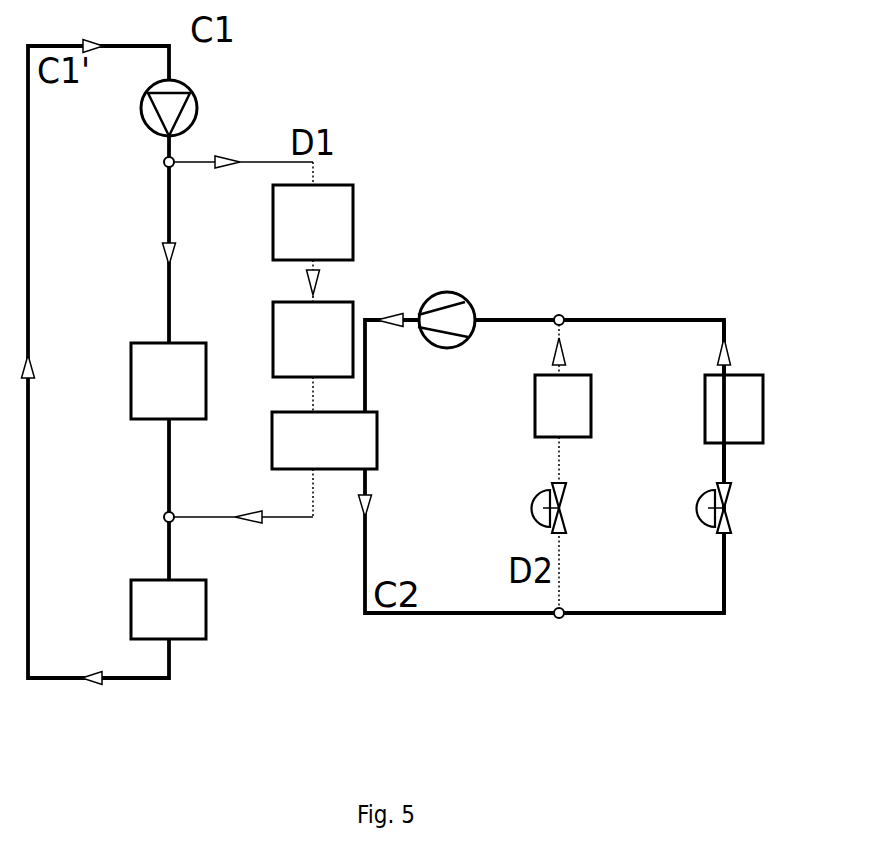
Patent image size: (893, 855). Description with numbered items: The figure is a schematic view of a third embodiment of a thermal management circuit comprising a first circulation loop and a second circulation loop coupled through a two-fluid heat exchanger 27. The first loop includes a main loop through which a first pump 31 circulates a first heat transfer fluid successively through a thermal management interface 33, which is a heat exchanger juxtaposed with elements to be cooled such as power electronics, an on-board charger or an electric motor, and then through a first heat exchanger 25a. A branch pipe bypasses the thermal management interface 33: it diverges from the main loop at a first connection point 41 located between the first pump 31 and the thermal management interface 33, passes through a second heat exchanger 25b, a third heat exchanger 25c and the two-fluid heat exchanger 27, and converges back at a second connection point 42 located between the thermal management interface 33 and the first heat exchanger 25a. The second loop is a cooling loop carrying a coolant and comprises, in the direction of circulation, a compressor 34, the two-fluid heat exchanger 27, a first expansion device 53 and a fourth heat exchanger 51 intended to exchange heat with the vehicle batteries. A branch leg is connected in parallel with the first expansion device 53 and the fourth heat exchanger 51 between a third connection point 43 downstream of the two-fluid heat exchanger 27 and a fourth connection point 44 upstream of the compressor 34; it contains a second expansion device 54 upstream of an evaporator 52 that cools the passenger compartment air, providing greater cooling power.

The first pump 31 is at (200, 110).
The first connection point 41 is at (145, 164).
The second connection point 42 is at (142, 515).
The thermal management interface 33 is at (168, 381).
The first heat exchanger 25a is at (168, 609).
The second heat exchanger 25b is at (313, 222).
The third heat exchanger 25c is at (313, 339).
The two-fluid heat exchanger 27 is at (324, 440).
The compressor 34 is at (426, 297).
The fourth connection point 44 is at (559, 299).
The third connection point 43 is at (558, 636).
The evaporator 52 is at (563, 406).
The fourth heat exchanger 51 is at (734, 409).
The second expansion device 54 is at (533, 503).
The first expansion device 53 is at (697, 508).